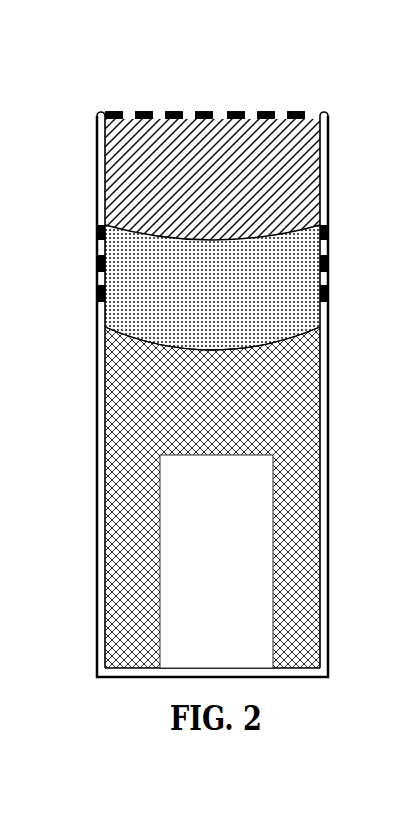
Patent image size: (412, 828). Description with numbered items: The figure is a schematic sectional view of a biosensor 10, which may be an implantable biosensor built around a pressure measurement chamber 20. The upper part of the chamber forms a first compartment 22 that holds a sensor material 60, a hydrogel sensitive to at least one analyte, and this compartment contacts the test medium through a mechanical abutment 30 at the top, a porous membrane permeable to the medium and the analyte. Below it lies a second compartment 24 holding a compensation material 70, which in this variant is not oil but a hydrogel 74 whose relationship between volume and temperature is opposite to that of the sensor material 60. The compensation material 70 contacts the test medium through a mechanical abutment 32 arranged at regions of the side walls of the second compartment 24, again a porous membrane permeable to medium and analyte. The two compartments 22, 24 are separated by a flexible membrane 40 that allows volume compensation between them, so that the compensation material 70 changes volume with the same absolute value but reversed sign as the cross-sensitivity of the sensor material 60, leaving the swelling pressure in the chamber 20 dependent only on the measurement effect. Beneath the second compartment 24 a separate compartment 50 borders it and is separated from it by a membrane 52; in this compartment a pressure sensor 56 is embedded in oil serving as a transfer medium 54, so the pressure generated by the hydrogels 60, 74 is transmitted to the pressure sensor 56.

The biosensor 10 is at (85, 84).
The pressure measurement chamber 20 is at (97, 203).
The first compartment 22 is at (137, 155).
The second compartment 24 is at (135, 307).
The mechanical abutment 30 is at (175, 111).
The mechanical abutment 32 is at (97, 264).
The flexible membrane 40 is at (282, 232).
The separate compartment 50 is at (133, 435).
The membrane 52 is at (283, 343).
The transfer medium 54 is at (212, 497).
The pressure sensor 56 is at (275, 570).
The sensor material 60 is at (212, 181).
The compensation material 70 is at (212, 300).
The hydrogel 74 is at (212, 287).